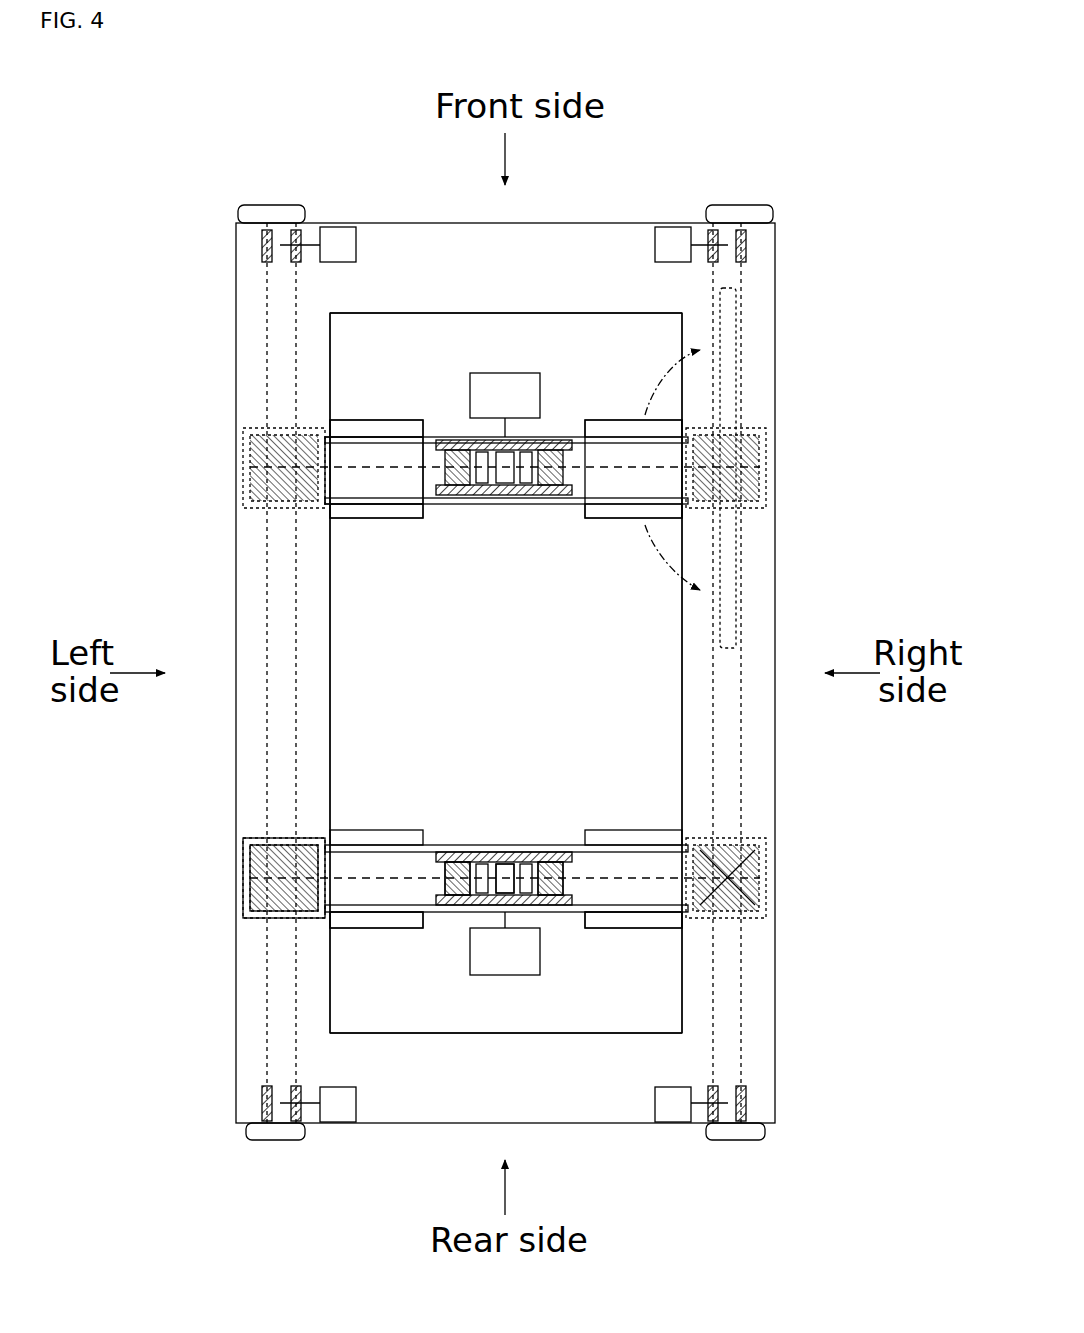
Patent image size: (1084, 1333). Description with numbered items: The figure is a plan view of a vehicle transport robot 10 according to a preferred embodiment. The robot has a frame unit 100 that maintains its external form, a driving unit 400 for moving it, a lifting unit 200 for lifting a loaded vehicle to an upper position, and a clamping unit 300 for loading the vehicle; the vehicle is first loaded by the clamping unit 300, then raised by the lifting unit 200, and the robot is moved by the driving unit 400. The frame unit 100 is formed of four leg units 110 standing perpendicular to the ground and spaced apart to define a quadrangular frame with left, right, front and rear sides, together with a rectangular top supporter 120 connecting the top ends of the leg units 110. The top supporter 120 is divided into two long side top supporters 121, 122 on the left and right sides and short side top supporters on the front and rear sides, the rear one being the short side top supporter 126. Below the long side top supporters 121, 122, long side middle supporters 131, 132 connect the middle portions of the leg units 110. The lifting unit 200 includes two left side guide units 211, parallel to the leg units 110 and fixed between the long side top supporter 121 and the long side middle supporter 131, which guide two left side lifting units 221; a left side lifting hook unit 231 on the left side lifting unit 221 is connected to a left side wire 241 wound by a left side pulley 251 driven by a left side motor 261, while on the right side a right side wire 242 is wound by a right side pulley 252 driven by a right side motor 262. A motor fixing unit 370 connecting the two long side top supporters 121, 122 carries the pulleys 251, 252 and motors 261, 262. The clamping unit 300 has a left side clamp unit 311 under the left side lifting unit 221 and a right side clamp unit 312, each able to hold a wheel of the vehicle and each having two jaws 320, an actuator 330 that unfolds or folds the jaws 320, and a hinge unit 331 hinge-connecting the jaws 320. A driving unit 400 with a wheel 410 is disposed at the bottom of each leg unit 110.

The vehicle transport robot 10 is at (237, 133).
The frame unit 100 is at (595, 222).
The leg units 110 is at (265, 235).
The top supporter 120 is at (432, 272).
The long side top supporter 121 is at (246, 556).
The long side top supporter 122 is at (765, 606).
The short side top supporter 126 is at (403, 1075).
The long side middle supporter 131 is at (276, 614).
The long side middle supporter 132 is at (735, 690).
The lifting unit 200 is at (245, 467).
The left side guide units 211 is at (246, 895).
The left side lifting units 221 is at (252, 856).
The left side lifting hook unit 231 is at (243, 880).
The left side wire 241 is at (378, 915).
The right side wire 242 is at (640, 912).
The left side pulley 251 is at (465, 850).
The right side pulley 252 is at (540, 850).
The left side motor 261 is at (505, 852).
The right side motor 262 is at (505, 878).
The clamping unit 300 is at (385, 520).
The left side clamp unit 311 is at (376, 469).
The right side clamp unit 312 is at (633, 469).
The jaws 320 is at (745, 356).
The actuator 330 is at (765, 879).
The hinge unit 331 is at (745, 835).
The motor fixing unit 370 is at (452, 437).
The driving unit 400 is at (775, 212).
The wheel 410 is at (281, 205).